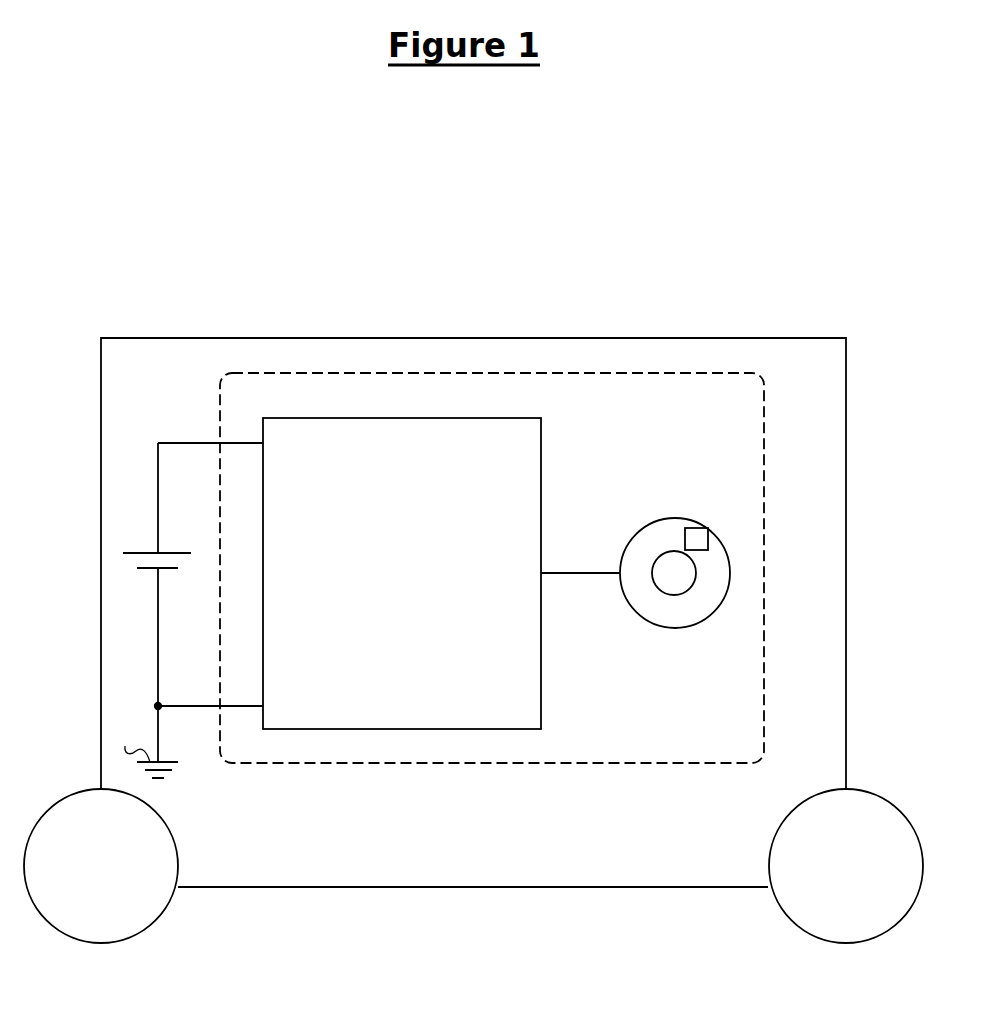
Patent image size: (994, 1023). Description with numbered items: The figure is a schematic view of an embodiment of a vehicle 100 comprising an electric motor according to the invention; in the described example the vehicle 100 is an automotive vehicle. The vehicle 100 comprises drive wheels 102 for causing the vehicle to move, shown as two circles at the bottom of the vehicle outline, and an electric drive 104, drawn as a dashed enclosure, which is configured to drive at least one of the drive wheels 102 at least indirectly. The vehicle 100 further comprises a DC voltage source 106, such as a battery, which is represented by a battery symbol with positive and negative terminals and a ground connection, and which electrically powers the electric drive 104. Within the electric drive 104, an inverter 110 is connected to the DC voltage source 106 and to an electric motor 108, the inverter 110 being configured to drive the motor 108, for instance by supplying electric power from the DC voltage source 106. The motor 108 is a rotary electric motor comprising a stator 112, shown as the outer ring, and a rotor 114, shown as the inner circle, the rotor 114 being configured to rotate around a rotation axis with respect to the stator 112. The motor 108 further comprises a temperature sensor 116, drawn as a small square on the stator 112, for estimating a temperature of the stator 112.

The vehicle 100 is at (163, 338).
The drive wheels 102 is at (120, 880).
The electric drive 104 is at (223, 379).
The DC voltage source 106 is at (146, 553).
The electric motor 108 is at (649, 569).
The inverter 110 is at (422, 586).
The stator 112 is at (637, 598).
The rotor 114 is at (680, 585).
The temperature sensor 116 is at (721, 520).